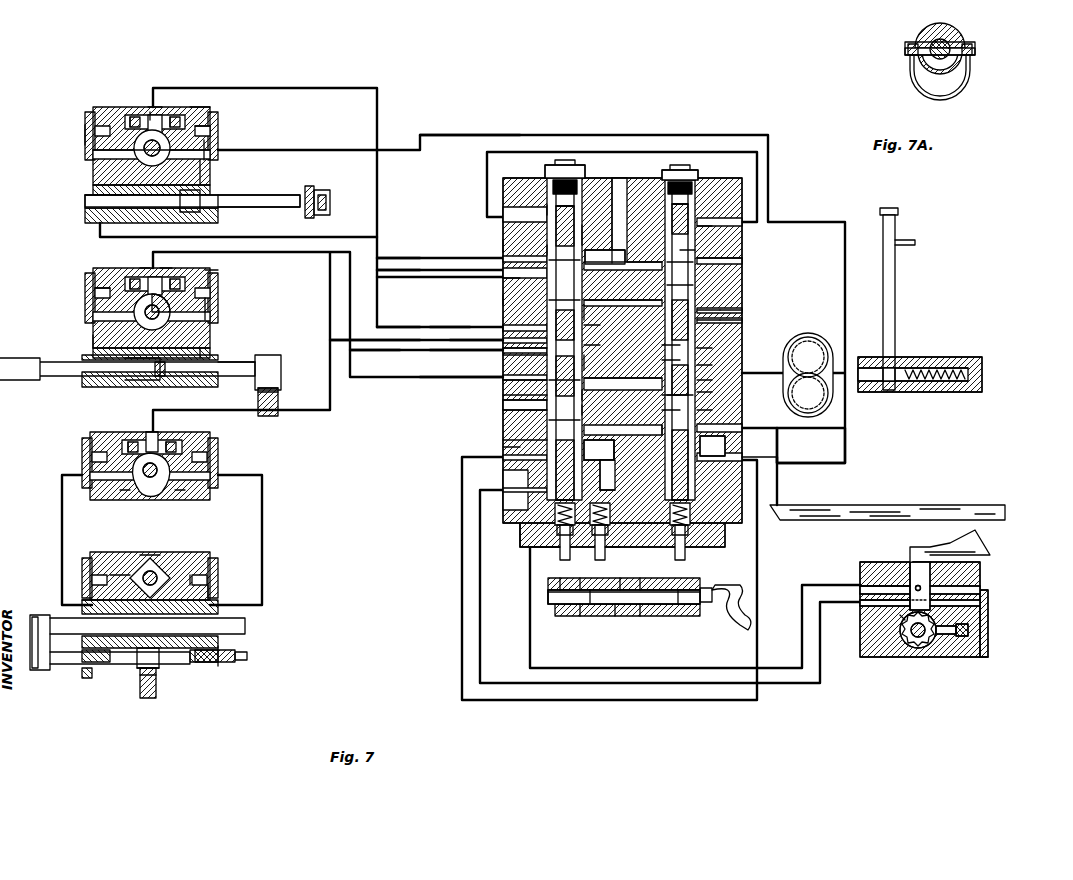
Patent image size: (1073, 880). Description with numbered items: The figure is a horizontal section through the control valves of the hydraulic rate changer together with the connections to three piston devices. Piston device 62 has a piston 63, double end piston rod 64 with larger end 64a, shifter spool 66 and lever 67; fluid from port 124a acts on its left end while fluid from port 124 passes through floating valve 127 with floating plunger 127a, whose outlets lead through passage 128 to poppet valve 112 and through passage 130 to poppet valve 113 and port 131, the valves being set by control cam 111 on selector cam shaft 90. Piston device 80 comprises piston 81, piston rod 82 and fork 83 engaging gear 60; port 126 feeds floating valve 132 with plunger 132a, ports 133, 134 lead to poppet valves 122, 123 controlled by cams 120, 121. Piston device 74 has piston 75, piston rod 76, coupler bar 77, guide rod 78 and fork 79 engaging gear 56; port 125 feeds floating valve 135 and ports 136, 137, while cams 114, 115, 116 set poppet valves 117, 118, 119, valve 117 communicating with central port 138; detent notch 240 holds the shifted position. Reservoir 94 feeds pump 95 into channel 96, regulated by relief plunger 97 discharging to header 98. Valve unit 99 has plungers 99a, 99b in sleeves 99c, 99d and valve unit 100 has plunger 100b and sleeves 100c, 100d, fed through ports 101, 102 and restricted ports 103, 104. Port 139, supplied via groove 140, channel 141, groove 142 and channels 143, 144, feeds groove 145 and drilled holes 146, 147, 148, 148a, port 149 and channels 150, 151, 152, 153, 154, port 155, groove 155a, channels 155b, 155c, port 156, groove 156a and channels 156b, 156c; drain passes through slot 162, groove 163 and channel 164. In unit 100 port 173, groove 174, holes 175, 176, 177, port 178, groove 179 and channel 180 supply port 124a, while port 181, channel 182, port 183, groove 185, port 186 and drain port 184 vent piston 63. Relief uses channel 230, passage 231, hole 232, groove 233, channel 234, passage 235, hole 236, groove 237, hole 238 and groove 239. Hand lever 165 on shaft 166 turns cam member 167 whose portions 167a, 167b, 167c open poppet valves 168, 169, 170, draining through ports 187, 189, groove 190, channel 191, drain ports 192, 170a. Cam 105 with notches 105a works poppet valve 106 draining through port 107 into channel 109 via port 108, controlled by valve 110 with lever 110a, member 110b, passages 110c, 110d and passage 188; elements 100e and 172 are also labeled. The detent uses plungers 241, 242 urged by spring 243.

In FIG. 7, the piston device 62 is at (62, 112).
In FIG. 7, the double end piston rod 64 is at (285, 198).
In FIG. 7, the piston 63 is at (200, 200).
In FIG. 7, the shifter spool 66 is at (306, 195).
In FIG. 7, the lever 67 is at (323, 193).
In FIG. 7, the poppet valve 112 is at (135, 135).
In FIG. 7, the port 124 is at (150, 110).
In FIG. 7, the floating valve 127 is at (158, 112).
In FIG. 7, the floating plunger 127a is at (180, 118).
In FIG. 7, the poppet valve 113 is at (195, 112).
In FIG. 7, the passage 130 is at (203, 127).
In FIG. 7, the port 181 is at (212, 142).
In FIG. 7, the passage 128 is at (88, 136).
In FIG. 7, the control cam 111 is at (130, 155).
In FIG. 7, the selector cam shaft 90 is at (138, 170).
In FIG. 7, the piston rod end 64a is at (100, 205).
In FIG. 7, the port 124a is at (100, 230).
In FIG. 7, the port 131 is at (205, 175).
In FIG. 7, the piston device 80 is at (60, 302).
In FIG. 7, the piston 81 is at (160, 380).
In FIG. 7, the piston rod 82 is at (240, 358).
In FIG. 7, the fork 83 is at (282, 365).
In FIG. 7, the gear 60 is at (278, 400).
In FIG. 7, the control cam 121 is at (138, 290).
In FIG. 7, the port 126 is at (140, 270).
In FIG. 7, the floating plunger 132a is at (170, 265).
In FIG. 7, the floating valve 132 is at (165, 282).
In FIG. 7, the control cam 120 is at (218, 275).
In FIG. 7, the poppet valve 123 is at (95, 300).
In FIG. 7, the poppet valve 122 is at (210, 303).
In FIG. 7, the port 133 is at (210, 345).
In FIG. 7, the port 134 is at (97, 340).
In FIG. 7, the floating valve 135 is at (158, 430).
In FIG. 7, the channel 154 is at (310, 260).
In FIG. 7, the channel 153 is at (332, 307).
In FIG. 7, the channel 152 is at (320, 415).
In FIG. 7, the piston device 74 is at (48, 498).
In FIG. 7, the control cam 115 is at (128, 440).
In FIG. 7, the port 125 is at (148, 438).
In FIG. 7, the control cam 116 is at (170, 445).
In FIG. 7, the poppet valve 118 is at (120, 495).
In FIG. 7, the poppet valve 119 is at (182, 498).
In FIG. 7, the poppet valve 117 is at (128, 575).
In FIG. 7, the control cam 114 is at (148, 562).
In FIG. 7, the central port 138 is at (198, 578).
In FIG. 7, the port 137 is at (210, 593).
In FIG. 7, the port 136 is at (90, 600).
In FIG. 7, the piston rod 76 is at (62, 620).
In FIG. 7, the coupler bar 77 is at (44, 660).
In FIG. 7, the guide rod 78 is at (120, 660).
In FIG. 7A, the guide rod 78 is at (932, 42).
In FIG. 7, the piston 75 is at (160, 645).
In FIG. 7, the fork 79 is at (160, 675).
In FIG. 7, the gear 56 is at (152, 700).
In FIG. 7, the detent notch 240 is at (245, 660).
In FIG. 7A, the detent notch 240 is at (950, 35).
In FIG. 7, the port 101 is at (503, 222).
In FIG. 7, the control valve unit 99 is at (564, 175).
In FIG. 7, the control valve unit 100 is at (688, 175).
In FIG. 7, the poppet valve 168 is at (555, 560).
In FIG. 7, the poppet valve 169 is at (580, 570).
In FIG. 7, the poppet valve 170 is at (690, 570).
In FIG. 7, the drain port 170a is at (610, 572).
In FIG. 7, the port 187 is at (548, 551).
In FIG. 7, the port 108 is at (540, 533).
In FIG. 7, the drain port 192 is at (615, 556).
In FIG. 7, the cam member 167 is at (635, 615).
In FIG. 7, the cam portion 167a is at (552, 596).
In FIG. 7, the cam portion 167b is at (592, 600).
In FIG. 7, the cam portion 167c is at (678, 600).
In FIG. 7, the shaft 166 is at (710, 590).
In FIG. 7, the hand lever 165 is at (730, 628).
In FIG. 7, the port 102 is at (742, 228).
In FIG. 7, the channel 96 is at (845, 292).
In FIG. 7, the pump 95 is at (818, 328).
In FIG. 7, the channel 144 is at (811, 445).
In FIG. 7, the port 173 is at (772, 428).
In FIG. 7, the restricted area port 104 is at (775, 458).
In FIG. 7, the header 98 is at (890, 325).
In FIG. 7, the spring pressed relief plunger 97 is at (900, 392).
In FIG. 7, the reservoir 94 is at (915, 500).
In FIG. 7, the drain port 184 is at (735, 310).
In FIG. 7, the port 183 is at (735, 320).
In FIG. 7, the annular groove 185 is at (723, 308).
In FIG. 7, the port 186 is at (723, 330).
In FIG. 7, the annular groove 239 is at (700, 280).
In FIG. 7, the valve sleeve 100c is at (715, 236).
In FIG. 7, the valve plunger 100b is at (690, 250).
In FIG. 7, the valve sleeve 100d is at (723, 390).
In FIG. 7, the land 100e is at (723, 405).
In FIG. 7, the drilled hole 176 is at (721, 350).
In FIG. 7, the drilled hole 175 is at (721, 366).
In FIG. 7, the annular groove 174 is at (719, 382).
In FIG. 7, the channel 143 is at (711, 443).
In FIG. 7, the channel 182 is at (470, 135).
In FIG. 7, the annular groove 233 is at (548, 210).
In FIG. 7, the drilled hole 232 is at (545, 250).
In FIG. 7, the passage 231 is at (503, 246).
In FIG. 7, the channel 230 is at (386, 258).
In FIG. 7, the channel 234 is at (385, 270).
In FIG. 7, the channel 155c is at (384, 325).
In FIG. 7, the passage 235 is at (490, 282).
In FIG. 7, the drilled hole 236 is at (503, 300).
In FIG. 7, the channel 155b is at (445, 327).
In FIG. 7, the annular groove 155a is at (503, 330).
In FIG. 7, the port 155 is at (465, 338).
In FIG. 7, the channel 151 is at (415, 349).
In FIG. 7, the channel 150 is at (530, 348).
In FIG. 7, the port 149 is at (545, 358).
In FIG. 7, the channel 156c is at (375, 362).
In FIG. 7, the port 156 is at (470, 368).
In FIG. 7, the channel 156b is at (460, 377).
In FIG. 7, the annular groove 156a is at (503, 382).
In FIG. 7, the drilled hole 146 is at (540, 393).
In FIG. 7, the annular groove 145 is at (540, 405).
In FIG. 7, the port 139 is at (540, 418).
In FIG. 7, the annular groove 140 is at (545, 432).
In FIG. 7, the restricted area port 103 is at (480, 447).
In FIG. 7, the valve sleeve 99c is at (585, 208).
In FIG. 7, the valve plunger 99a is at (584, 232).
In FIG. 7, the annular groove 237 is at (605, 252).
In FIG. 7, the drilled hole 238 is at (645, 248).
In FIG. 7, the slot 162 is at (601, 288).
In FIG. 7, the drain channel 164 is at (638, 302).
In FIG. 7, the annular groove 163 is at (584, 306).
In FIG. 7, the drilled hole 148 is at (608, 325).
In FIG. 7, the drilled hole 148a is at (612, 345).
In FIG. 7, the drilled hole 147 is at (584, 363).
In FIG. 7, the port 178 is at (660, 345).
In FIG. 7, the drilled hole 177 is at (663, 357).
In FIG. 7, the passage 172 is at (623, 375).
In FIG. 7, the valve sleeve 99d is at (584, 395).
In FIG. 7, the valve plunger 99b is at (584, 408).
In FIG. 7, the annular groove 179 is at (656, 393).
In FIG. 7, the channel 180 is at (656, 410).
In FIG. 7, the port 189 is at (584, 440).
In FIG. 7, the channel 141 is at (625, 440).
In FIG. 7, the annular groove 190 is at (590, 462).
In FIG. 7, the annular groove 142 is at (660, 435).
In FIG. 7, the channel 191 is at (600, 485).
In FIG. 7, the valve 110 is at (1000, 604).
In FIG. 7, the hand lever 110a is at (975, 542).
In FIG. 7, the valve member 110b is at (920, 577).
In FIG. 7, the passage 188 is at (890, 580).
In FIG. 7, the port 110d is at (940, 590).
In FIG. 7, the channel 109 is at (875, 605).
In FIG. 7, the port 110c is at (890, 620).
In FIG. 7, the spring pressed poppet valve 106 is at (988, 657).
In FIG. 7, the cam 105 is at (925, 645).
In FIG. 7, the notch 105a is at (945, 660).
In FIG. 7, the drain port 107 is at (960, 660).
In FIG. 7A, the plunger 241 is at (912, 40).
In FIG. 7A, the plunger 242 is at (966, 42).
In FIG. 7A, the spring 243 is at (914, 90).